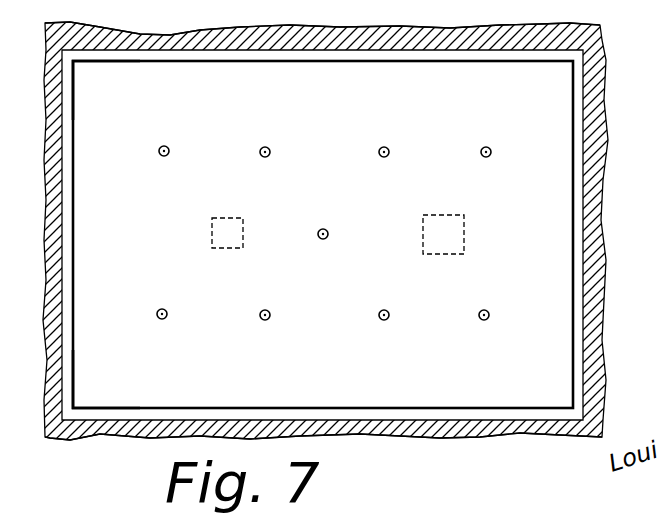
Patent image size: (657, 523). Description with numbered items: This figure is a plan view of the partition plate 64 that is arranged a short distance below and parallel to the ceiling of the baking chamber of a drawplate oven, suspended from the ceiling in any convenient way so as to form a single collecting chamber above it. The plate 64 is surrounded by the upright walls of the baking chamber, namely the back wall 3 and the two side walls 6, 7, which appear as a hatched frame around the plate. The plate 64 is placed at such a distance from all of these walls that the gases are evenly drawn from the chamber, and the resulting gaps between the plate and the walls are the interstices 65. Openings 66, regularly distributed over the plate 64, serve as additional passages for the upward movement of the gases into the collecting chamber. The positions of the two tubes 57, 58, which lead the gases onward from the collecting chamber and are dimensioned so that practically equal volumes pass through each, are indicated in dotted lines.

The back wall 3 is at (601, 219).
The side wall 6 is at (254, 31).
The side wall 7 is at (150, 436).
The partition plate 64 is at (566, 188).
The interstices 65 is at (82, 444).
The openings 66 is at (494, 152).
The tube 57 is at (227, 233).
The tube 58 is at (443, 234).